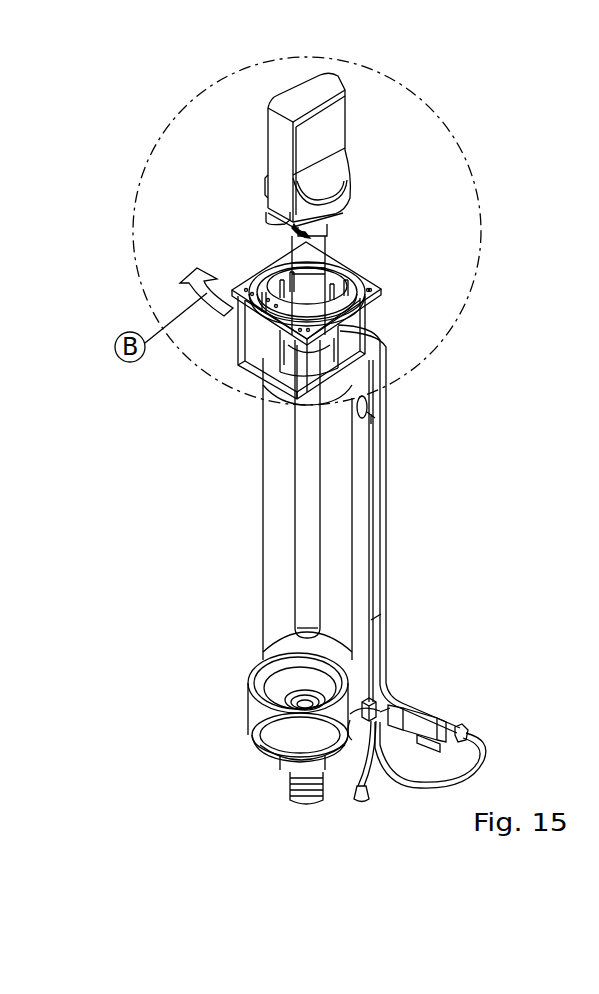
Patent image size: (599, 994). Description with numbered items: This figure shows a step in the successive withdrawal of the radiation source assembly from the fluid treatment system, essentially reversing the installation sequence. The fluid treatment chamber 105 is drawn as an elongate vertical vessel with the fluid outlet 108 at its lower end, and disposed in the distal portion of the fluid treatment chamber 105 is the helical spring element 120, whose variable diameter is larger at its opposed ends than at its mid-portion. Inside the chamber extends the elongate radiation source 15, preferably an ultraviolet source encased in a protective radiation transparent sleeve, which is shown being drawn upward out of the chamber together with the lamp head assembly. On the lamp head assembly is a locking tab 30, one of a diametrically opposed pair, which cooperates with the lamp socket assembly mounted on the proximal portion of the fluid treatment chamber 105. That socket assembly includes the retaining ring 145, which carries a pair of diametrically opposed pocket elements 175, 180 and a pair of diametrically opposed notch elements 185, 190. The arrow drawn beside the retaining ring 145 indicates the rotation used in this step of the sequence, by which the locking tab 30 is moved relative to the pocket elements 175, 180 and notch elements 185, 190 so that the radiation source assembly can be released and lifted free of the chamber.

The locking tab 30 is at (285, 222).
The retaining ring 145 is at (262, 268).
The notch element 190 is at (343, 260).
The pocket element 180 is at (381, 268).
The notch element 185 is at (240, 317).
The pocket element 175 is at (260, 277).
The fluid treatment chamber 105 is at (263, 515).
The elongate radiation source 15 is at (300, 590).
The helical spring element 120 is at (250, 685).
The fluid outlet 108 is at (290, 800).